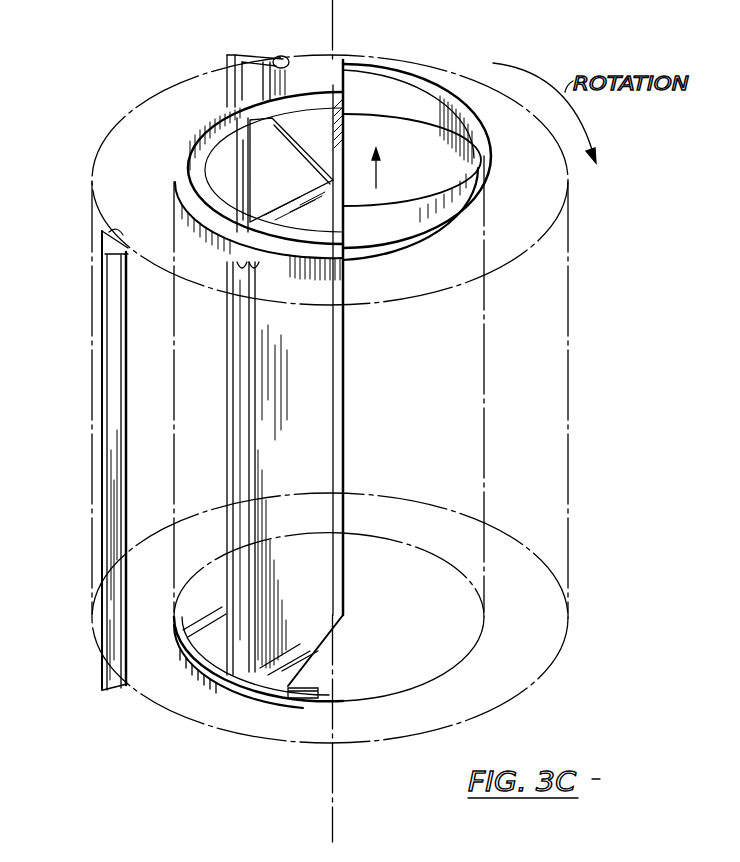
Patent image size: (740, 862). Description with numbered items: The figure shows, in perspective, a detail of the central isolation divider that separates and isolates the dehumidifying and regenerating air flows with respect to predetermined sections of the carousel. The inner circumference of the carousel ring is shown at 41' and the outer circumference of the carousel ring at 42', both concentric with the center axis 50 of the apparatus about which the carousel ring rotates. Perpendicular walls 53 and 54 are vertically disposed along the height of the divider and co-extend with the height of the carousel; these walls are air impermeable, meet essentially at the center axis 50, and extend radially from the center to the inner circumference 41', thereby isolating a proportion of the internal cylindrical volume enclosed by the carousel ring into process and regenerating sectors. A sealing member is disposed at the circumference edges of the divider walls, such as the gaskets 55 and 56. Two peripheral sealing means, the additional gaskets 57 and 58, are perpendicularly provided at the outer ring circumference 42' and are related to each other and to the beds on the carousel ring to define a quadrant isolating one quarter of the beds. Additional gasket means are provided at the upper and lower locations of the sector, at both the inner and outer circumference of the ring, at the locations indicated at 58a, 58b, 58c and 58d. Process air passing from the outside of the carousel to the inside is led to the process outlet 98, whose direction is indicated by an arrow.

The center axis 50 is at (330, 795).
The perpendicular wall 53 is at (306, 516).
The perpendicular wall 54 is at (306, 189).
The gasket 55 is at (226, 373).
The gasket 56 is at (240, 205).
The peripheral sealing gasket 57 is at (103, 231).
The peripheral sealing gasket 58 is at (283, 56).
The gasket sealing location 58a is at (182, 157).
The gasket sealing location 58b is at (190, 72).
The gasket sealing location 58c is at (150, 522).
The gasket sealing location 58d is at (180, 590).
The inner circumference of the carousel ring 41' is at (353, 384).
The outer circumference of the carousel ring 42' is at (360, 400).
The process outlet 98 is at (376, 159).